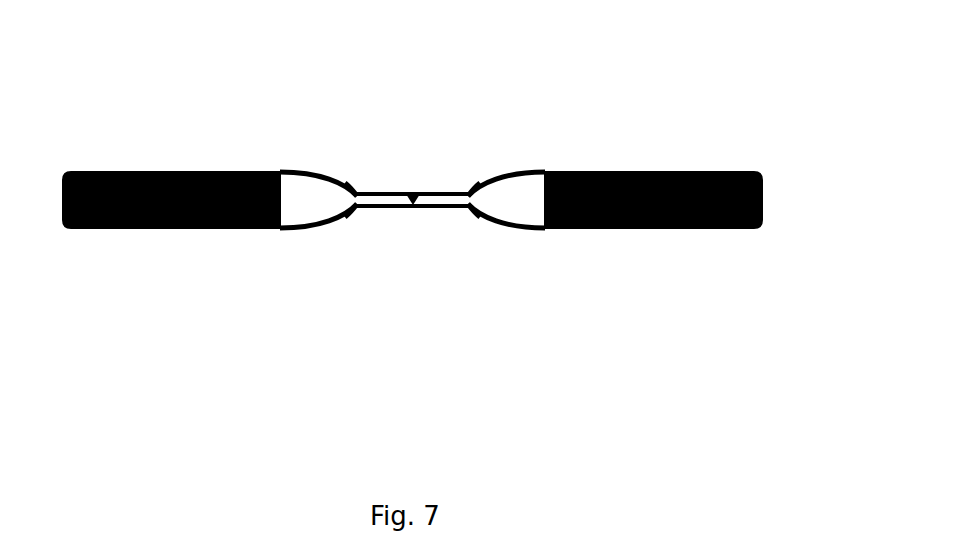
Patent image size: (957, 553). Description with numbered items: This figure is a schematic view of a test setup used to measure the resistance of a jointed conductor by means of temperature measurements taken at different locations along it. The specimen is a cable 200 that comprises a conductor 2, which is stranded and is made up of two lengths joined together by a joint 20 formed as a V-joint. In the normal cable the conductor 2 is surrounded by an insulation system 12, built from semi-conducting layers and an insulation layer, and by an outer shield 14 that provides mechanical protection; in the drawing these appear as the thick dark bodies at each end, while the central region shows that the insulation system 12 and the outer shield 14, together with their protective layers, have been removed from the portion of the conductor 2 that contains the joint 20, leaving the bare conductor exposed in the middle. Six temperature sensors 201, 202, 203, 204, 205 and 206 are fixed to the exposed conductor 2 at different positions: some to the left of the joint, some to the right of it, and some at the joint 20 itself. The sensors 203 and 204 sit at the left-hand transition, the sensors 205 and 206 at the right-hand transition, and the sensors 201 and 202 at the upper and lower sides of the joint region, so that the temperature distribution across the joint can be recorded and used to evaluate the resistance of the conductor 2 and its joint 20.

The cable 200 is at (590, 118).
The conductor 2 is at (437, 182).
The insulation system 12 is at (303, 208).
The outer shield 14 is at (187, 230).
The joint 20 is at (405, 208).
The temperature sensor 201 is at (403, 189).
The temperature sensor 202 is at (413, 212).
The temperature sensor 203 is at (355, 188).
The temperature sensor 204 is at (352, 215).
The temperature sensor 205 is at (472, 217).
The temperature sensor 206 is at (468, 188).